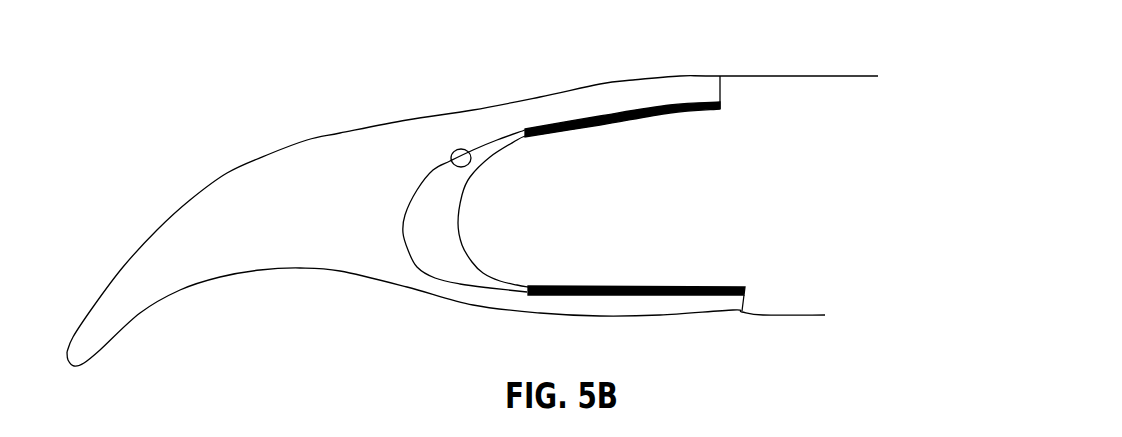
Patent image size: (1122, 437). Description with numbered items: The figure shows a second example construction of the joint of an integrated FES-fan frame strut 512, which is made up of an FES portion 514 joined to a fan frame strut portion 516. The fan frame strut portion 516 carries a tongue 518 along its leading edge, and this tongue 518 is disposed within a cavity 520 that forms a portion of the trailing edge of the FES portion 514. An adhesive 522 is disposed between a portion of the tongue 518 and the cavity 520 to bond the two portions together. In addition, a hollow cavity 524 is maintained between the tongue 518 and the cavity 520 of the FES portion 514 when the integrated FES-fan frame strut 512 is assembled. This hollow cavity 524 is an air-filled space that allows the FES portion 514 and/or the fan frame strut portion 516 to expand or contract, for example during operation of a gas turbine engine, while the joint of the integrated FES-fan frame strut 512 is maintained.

The integrated FES-fan frame strut 512 is at (467, 188).
The FES portion 514 is at (254, 270).
The fan frame strut portion 516 is at (788, 75).
The tongue 518 is at (620, 216).
The cavity 520 is at (472, 155).
The adhesive 522 is at (685, 113).
The hollow cavity 524 is at (451, 236).